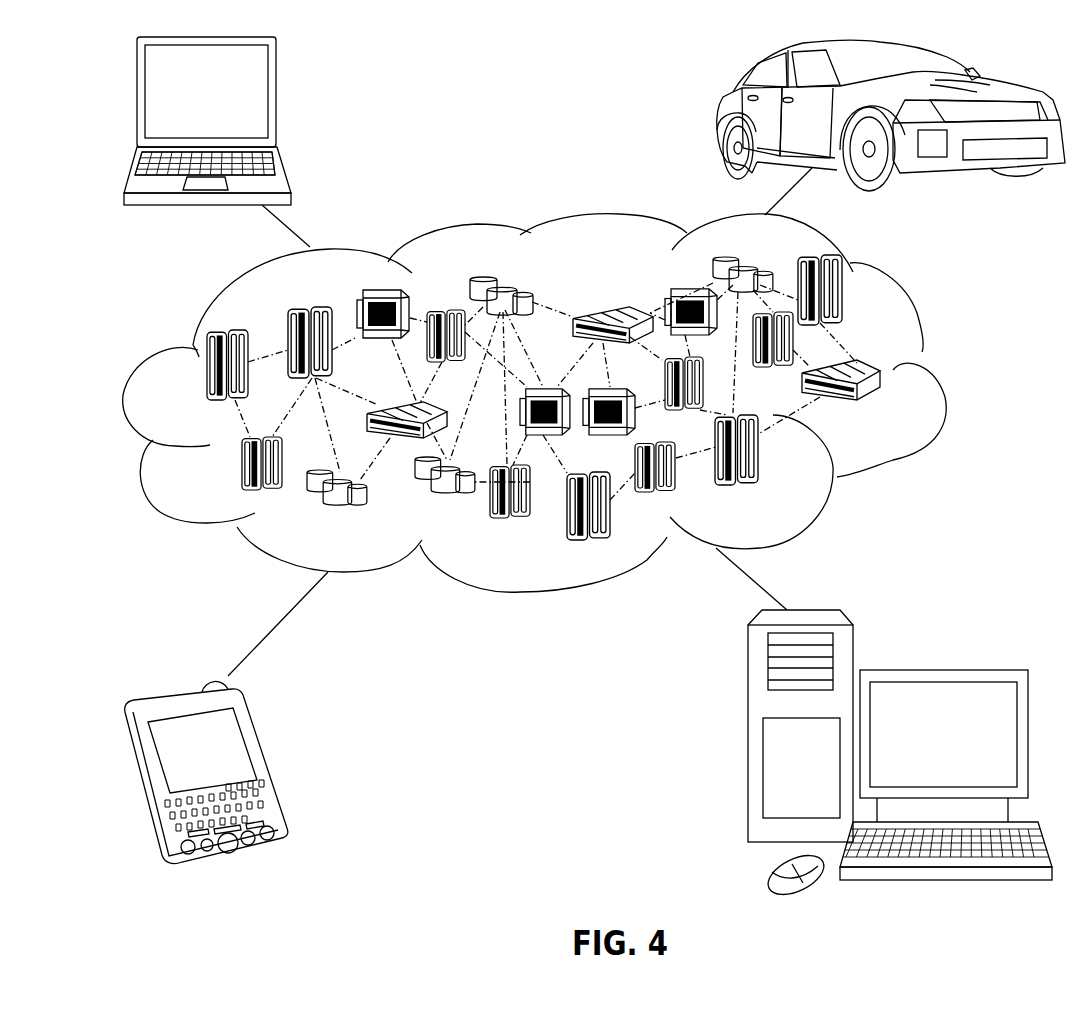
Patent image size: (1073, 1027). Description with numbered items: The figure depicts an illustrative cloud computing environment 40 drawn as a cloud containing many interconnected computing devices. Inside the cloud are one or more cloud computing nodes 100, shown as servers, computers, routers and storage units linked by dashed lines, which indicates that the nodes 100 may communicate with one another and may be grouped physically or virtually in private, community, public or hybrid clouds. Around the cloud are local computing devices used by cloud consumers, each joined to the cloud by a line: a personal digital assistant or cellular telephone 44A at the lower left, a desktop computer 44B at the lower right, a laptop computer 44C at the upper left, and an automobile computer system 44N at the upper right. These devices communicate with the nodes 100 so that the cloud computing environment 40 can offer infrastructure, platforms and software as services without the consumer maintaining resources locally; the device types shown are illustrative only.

The cloud computing environment 40 is at (942, 375).
The cloud computing nodes 100 is at (882, 405).
The personal digital assistant (PDA) or cellular telephone 44A is at (267, 763).
The desktop computer 44B is at (940, 668).
The laptop computer 44C is at (277, 101).
The automobile computer system 44N is at (720, 116).